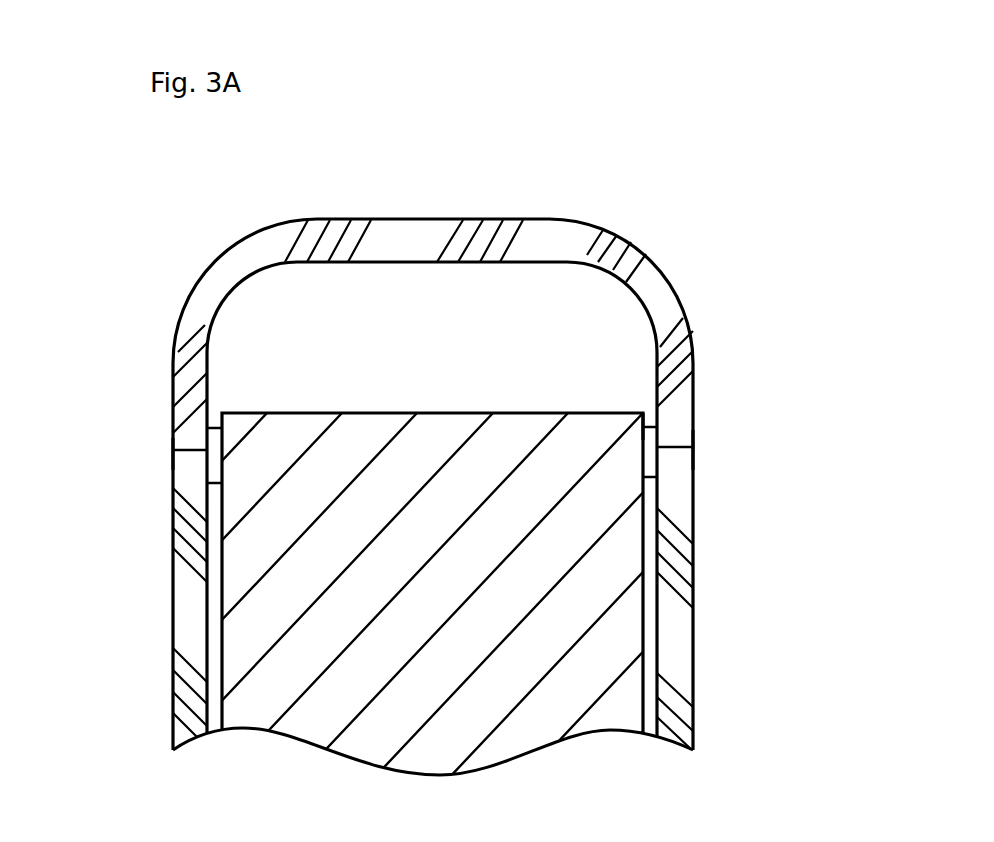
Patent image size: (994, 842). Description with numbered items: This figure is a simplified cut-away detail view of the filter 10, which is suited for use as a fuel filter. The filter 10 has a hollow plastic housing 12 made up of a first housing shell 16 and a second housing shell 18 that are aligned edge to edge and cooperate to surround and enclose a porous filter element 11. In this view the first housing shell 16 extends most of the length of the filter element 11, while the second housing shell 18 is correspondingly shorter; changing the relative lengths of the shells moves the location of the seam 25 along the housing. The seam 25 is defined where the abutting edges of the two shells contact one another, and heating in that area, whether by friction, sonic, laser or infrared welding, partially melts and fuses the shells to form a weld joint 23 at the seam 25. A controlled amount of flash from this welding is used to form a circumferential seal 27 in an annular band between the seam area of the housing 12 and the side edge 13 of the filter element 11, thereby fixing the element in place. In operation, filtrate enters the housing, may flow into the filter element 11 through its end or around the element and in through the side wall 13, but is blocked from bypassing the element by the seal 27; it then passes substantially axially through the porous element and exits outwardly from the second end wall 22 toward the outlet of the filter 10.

The filter 10 is at (628, 166).
The filter element 11 is at (654, 604).
The housing 12 is at (164, 588).
The side edge 13 is at (645, 649).
The first housing shell 16 is at (163, 724).
The second housing shell 18 is at (174, 325).
The second end wall 22 is at (378, 412).
The weld joint 23 is at (176, 466).
The seam 25 is at (693, 430).
The circumferential seal 27 is at (662, 431).